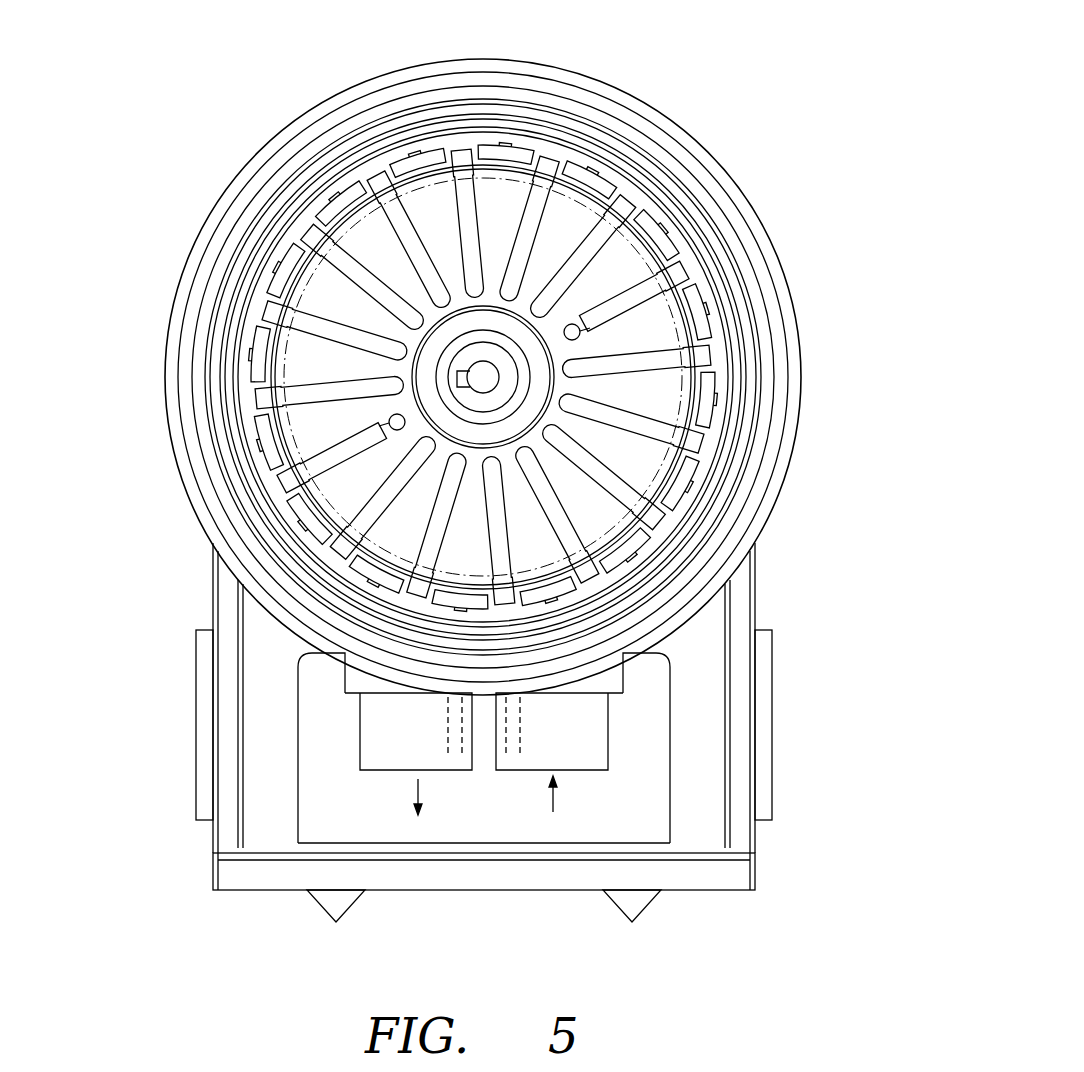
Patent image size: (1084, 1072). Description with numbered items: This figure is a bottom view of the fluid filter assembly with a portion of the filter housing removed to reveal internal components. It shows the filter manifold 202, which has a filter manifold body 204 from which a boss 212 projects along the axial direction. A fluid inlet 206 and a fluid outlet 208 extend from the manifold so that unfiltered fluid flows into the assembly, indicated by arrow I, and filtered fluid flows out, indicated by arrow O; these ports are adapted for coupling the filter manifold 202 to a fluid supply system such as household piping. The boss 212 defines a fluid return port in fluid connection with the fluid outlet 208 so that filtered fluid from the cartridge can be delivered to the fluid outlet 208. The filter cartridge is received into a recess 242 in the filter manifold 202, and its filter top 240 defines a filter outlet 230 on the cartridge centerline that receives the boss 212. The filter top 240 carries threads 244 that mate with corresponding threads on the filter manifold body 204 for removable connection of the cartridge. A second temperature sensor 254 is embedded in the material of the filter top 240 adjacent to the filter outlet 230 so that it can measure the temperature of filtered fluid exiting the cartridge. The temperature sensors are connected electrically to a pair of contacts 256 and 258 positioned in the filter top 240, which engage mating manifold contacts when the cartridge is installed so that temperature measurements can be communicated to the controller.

The filter manifold 202 is at (708, 61).
The filter manifold body 204 is at (741, 607).
The fluid inlet 206 is at (596, 745).
The fluid outlet 208 is at (372, 746).
The boss 212 is at (481, 333).
The filter outlet 230 is at (500, 383).
The filter top 240 is at (712, 168).
The recess 242 is at (662, 442).
The threads 244 is at (443, 138).
The second temperature sensor 254 is at (457, 372).
The contact 256 is at (378, 420).
The contact 258 is at (593, 330).